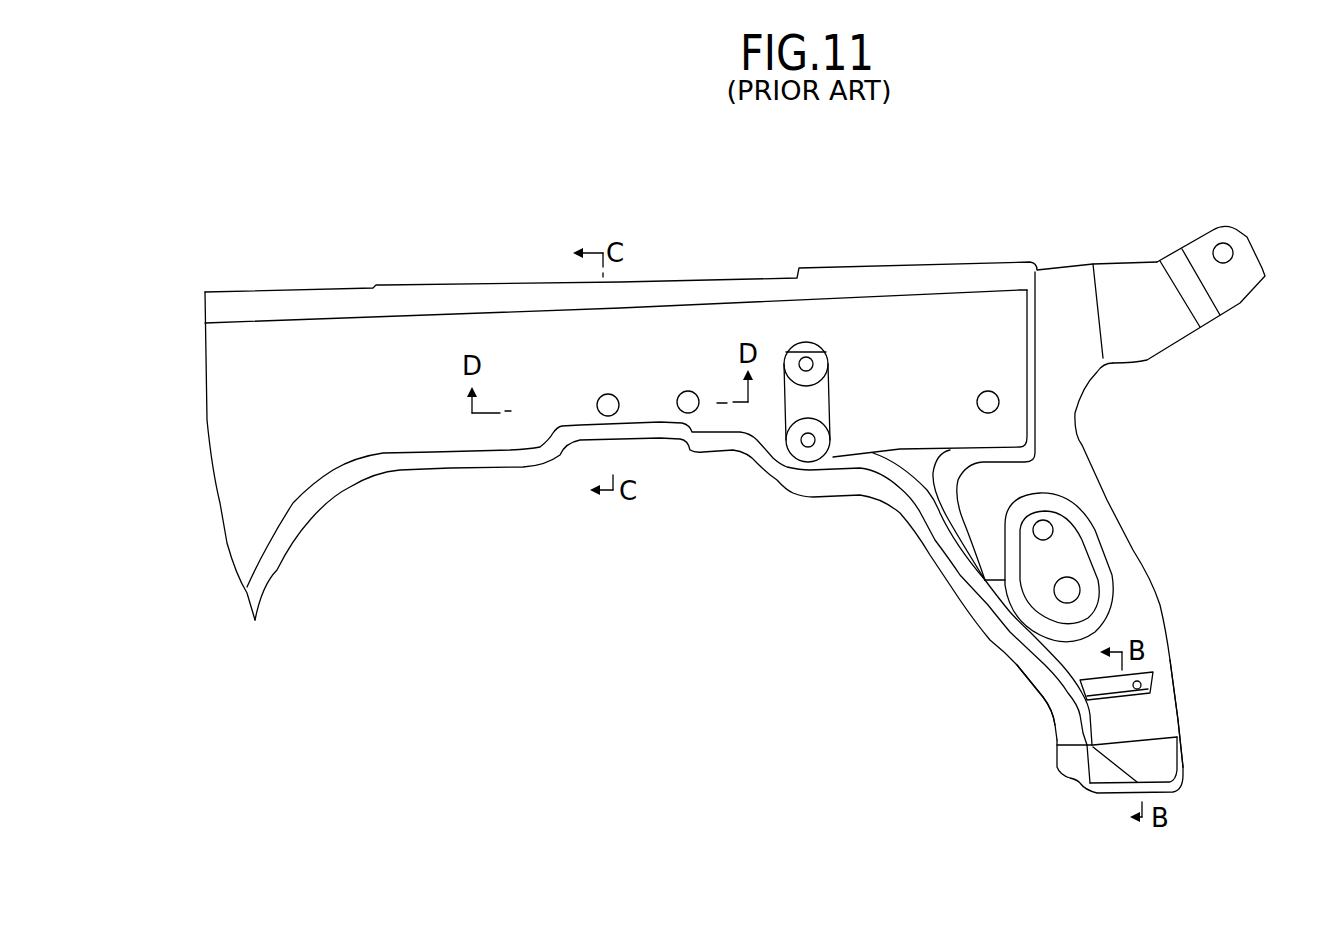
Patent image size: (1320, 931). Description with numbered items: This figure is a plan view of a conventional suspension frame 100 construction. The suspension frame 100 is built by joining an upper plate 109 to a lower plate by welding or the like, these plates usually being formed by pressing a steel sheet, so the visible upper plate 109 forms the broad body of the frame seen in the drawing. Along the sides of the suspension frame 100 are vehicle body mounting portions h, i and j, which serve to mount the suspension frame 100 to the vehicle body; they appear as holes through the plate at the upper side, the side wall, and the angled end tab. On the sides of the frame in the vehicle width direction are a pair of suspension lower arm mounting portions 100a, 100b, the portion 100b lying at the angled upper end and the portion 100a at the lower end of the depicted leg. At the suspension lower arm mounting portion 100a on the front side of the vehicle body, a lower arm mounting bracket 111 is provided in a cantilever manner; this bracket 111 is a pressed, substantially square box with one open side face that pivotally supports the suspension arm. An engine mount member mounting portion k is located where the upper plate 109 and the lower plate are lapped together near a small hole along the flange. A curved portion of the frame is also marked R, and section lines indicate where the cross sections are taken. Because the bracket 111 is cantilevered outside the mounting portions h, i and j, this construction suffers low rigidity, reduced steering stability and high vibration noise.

The suspension frame 100 is at (458, 435).
The upper plate 109 is at (550, 330).
The suspension lower arm mounting portion 100a is at (1190, 773).
The suspension lower arm mounting portion 100b is at (1240, 303).
The lower arm mounting bracket 111 is at (1077, 782).
The engine mount member mounting portion k is at (687, 413).
The vehicle body mounting portion i is at (999, 403).
The vehicle body mounting portion j is at (1215, 248).
The vehicle body mounting portion h is at (1053, 530).
The bent portion R is at (1036, 702).